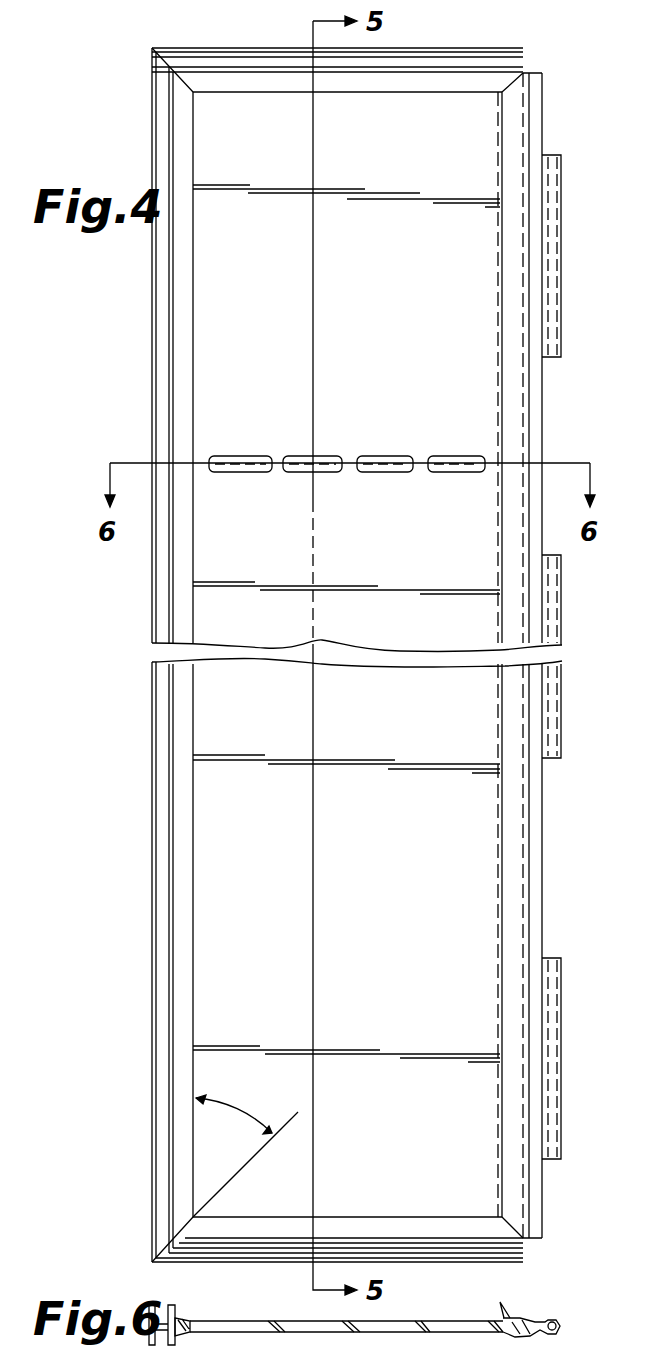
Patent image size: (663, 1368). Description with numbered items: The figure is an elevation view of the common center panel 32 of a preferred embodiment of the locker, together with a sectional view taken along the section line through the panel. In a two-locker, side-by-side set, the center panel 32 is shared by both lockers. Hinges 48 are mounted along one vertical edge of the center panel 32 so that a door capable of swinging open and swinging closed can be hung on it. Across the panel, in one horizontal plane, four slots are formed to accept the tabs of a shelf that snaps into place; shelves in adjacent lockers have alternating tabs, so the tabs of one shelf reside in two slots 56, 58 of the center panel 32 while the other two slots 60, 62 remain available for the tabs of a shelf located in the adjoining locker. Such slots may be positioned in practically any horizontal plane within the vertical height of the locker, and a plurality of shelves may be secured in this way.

The common center panel 32 is at (424, 808).
The hinges 48 is at (560, 1070).
The slot 56 is at (233, 474).
The slot 58 is at (386, 474).
The slot 60 is at (340, 456).
The slot 62 is at (450, 456).